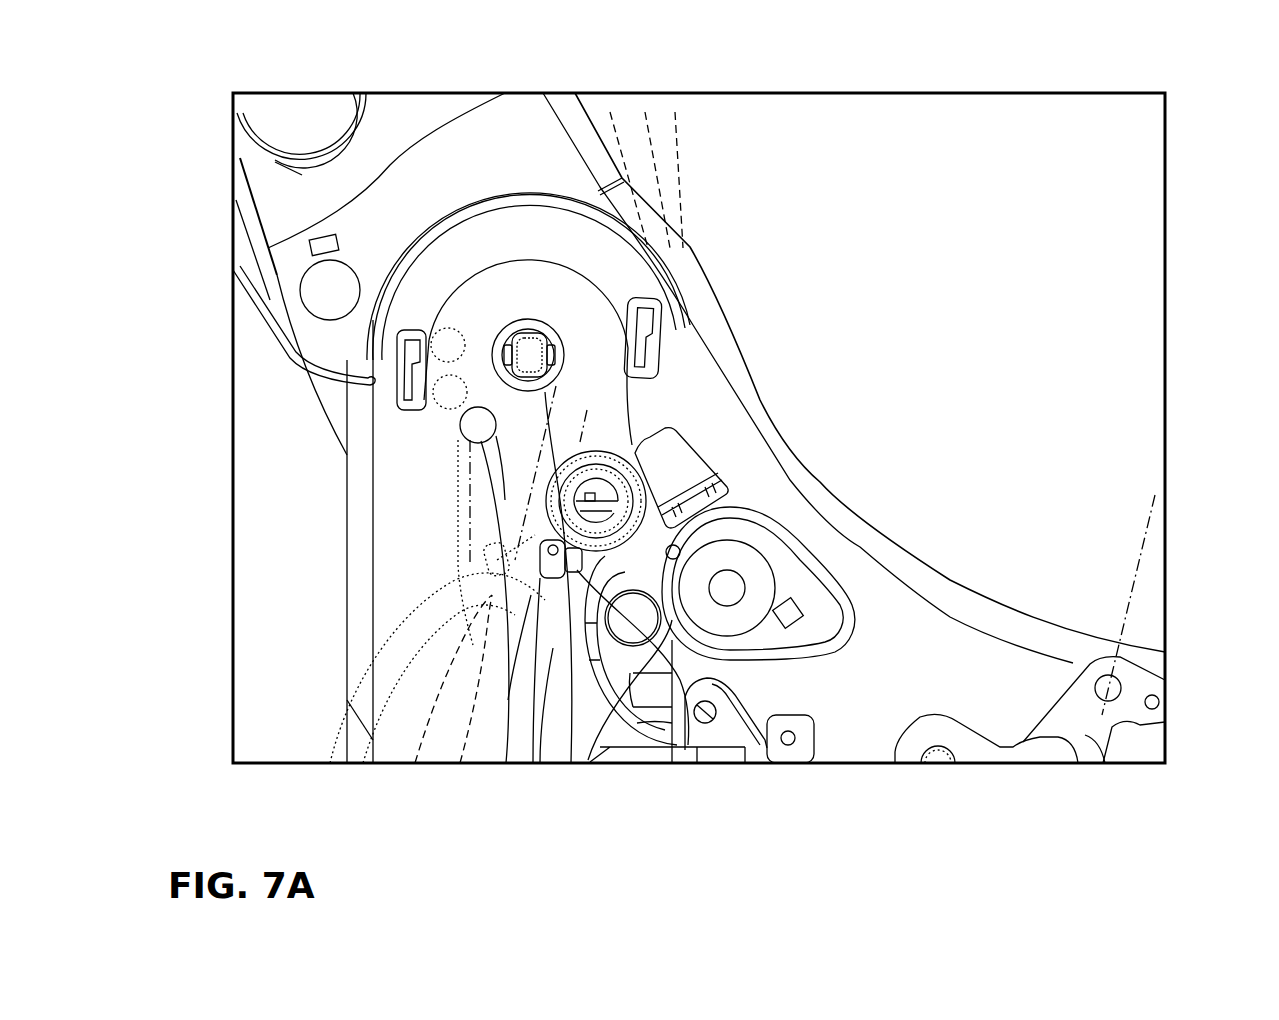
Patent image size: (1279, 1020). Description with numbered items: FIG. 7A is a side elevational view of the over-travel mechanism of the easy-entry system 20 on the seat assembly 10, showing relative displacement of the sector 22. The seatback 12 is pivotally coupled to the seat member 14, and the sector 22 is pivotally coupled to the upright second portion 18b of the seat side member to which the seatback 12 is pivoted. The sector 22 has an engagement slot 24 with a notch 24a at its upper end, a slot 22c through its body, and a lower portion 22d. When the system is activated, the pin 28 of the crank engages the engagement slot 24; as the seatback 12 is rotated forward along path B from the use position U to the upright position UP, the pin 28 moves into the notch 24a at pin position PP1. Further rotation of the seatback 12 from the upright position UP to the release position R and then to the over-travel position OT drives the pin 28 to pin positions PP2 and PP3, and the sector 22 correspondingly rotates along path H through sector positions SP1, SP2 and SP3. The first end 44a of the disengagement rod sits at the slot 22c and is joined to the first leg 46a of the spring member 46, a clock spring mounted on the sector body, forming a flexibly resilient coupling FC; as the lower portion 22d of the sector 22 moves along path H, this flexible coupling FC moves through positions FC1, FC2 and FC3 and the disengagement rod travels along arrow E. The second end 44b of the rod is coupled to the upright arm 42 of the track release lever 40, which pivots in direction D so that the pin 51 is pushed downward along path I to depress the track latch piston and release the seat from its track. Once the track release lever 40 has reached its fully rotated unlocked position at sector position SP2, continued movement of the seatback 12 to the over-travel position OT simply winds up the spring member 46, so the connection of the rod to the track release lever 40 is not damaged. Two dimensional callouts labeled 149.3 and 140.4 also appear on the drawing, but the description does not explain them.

The seat assembly 10 is at (855, 397).
The seatback 12 is at (295, 196).
The seat member 14 is at (937, 537).
The second portion 18b is at (390, 582).
The easy-entry system 20 is at (315, 697).
The sector 22 is at (613, 358).
The slot 22c is at (686, 765).
The lower portion 22d is at (593, 722).
The engagement slot 24 is at (495, 430).
The notch 24a is at (500, 368).
The pin 28 is at (453, 421).
The track release lever 40 is at (975, 748).
The upright arm 42 is at (1103, 763).
The first end 44a is at (500, 518).
The second end 44b is at (1116, 680).
The spring member 46 is at (612, 455).
The first leg 46a is at (573, 763).
The pin 51 is at (935, 757).
The dimension 149.3 is at (1148, 515).
The dimension 140.4 is at (1138, 553).
The arrow B is at (612, 152).
The arrow D is at (980, 683).
The arrow E is at (877, 618).
The path H is at (557, 702).
The arrow I is at (957, 775).
The use position U is at (585, 115).
The upright position UP is at (610, 113).
The release position R is at (645, 113).
The over-travel position OT is at (675, 113).
The pin position PP1 is at (450, 403).
The pin position PP2 is at (455, 368).
The pin position PP3 is at (450, 330).
The flexible coupling FC is at (500, 533).
The flexible coupling position FC1 is at (506, 763).
The flexible coupling position FC2 is at (417, 763).
The flexible coupling position FC3 is at (330, 763).
The sector position SP1 is at (535, 763).
The sector position SP2 is at (460, 763).
The sector position SP3 is at (363, 763).